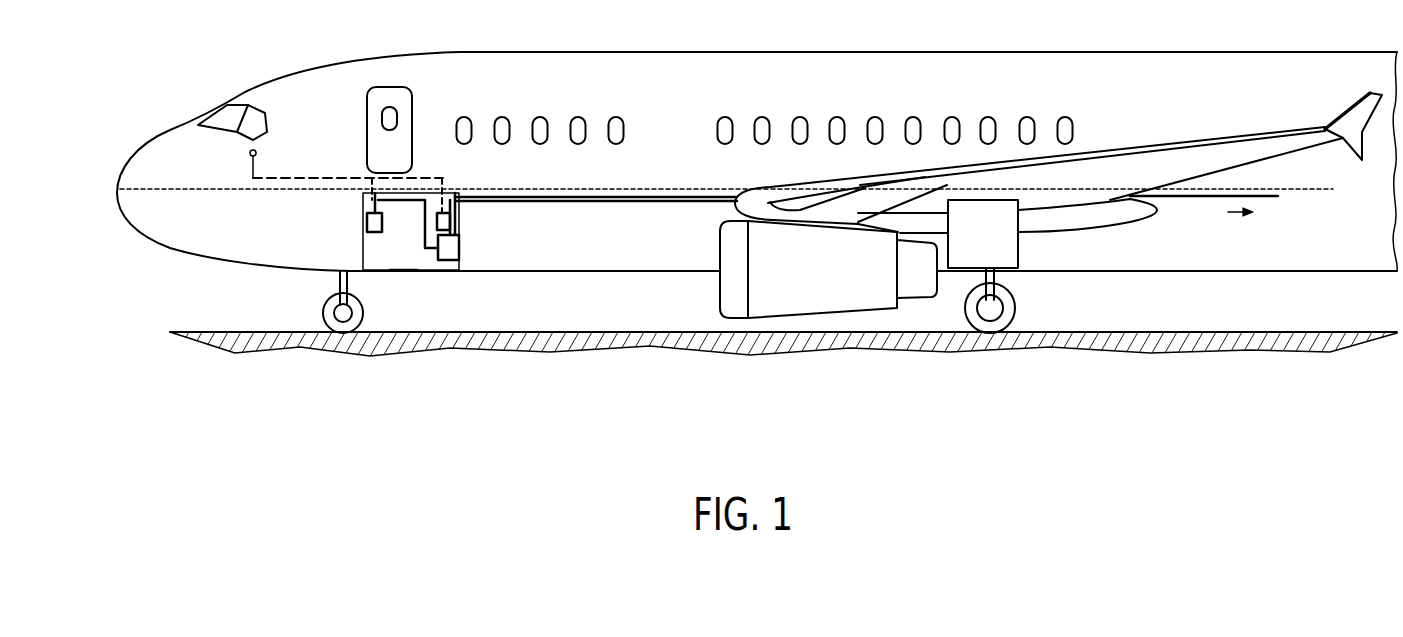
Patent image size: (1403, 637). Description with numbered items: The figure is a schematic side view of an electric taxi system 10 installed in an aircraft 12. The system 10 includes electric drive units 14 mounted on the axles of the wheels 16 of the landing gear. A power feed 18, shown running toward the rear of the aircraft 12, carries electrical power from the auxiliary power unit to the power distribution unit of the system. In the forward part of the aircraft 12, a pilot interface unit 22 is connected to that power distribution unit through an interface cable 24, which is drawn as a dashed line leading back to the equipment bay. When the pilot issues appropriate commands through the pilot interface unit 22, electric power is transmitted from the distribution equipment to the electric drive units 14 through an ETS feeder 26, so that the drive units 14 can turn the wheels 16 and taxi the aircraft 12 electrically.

The electric taxi system 10 is at (258, 293).
The aircraft 12 is at (312, 68).
The electric drive unit 14 is at (965, 313).
The wheel 16 is at (1015, 312).
The power feed 18 is at (1262, 198).
The pilot interface unit 22 is at (250, 154).
The interface cable 24 is at (303, 178).
The ETS feeder 26 is at (584, 203).